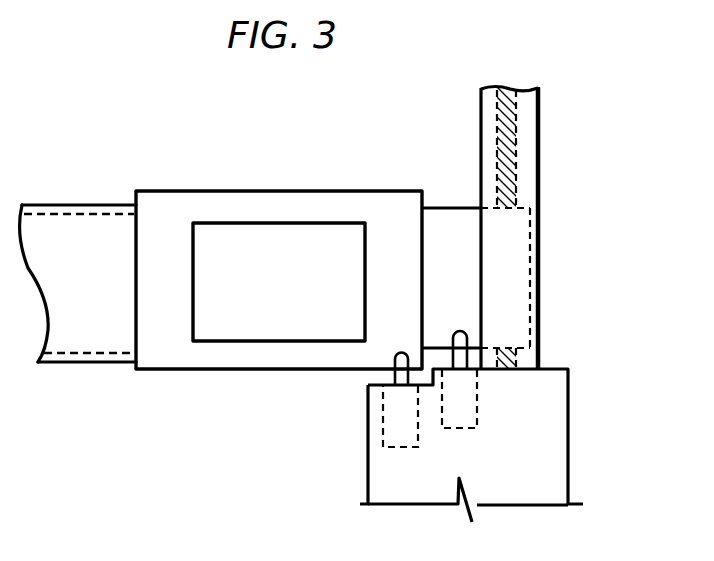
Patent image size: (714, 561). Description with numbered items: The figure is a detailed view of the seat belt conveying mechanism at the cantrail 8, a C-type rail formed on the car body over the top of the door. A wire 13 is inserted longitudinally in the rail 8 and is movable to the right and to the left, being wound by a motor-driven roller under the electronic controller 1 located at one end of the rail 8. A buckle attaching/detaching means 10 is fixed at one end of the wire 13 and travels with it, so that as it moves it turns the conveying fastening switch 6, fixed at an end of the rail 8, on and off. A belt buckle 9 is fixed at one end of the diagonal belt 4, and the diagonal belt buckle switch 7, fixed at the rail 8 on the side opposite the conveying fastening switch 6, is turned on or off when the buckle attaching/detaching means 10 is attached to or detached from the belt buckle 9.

The electronic controller 1 is at (553, 459).
The diagonal belt 4 is at (80, 340).
The conveying fastening switch 6 is at (470, 402).
The diagonal belt buckle switch 7 is at (392, 426).
The cantrail 8 is at (530, 187).
The belt buckle 9 is at (217, 360).
The buckle attaching/detaching means 10 is at (448, 222).
The wire 13 is at (510, 146).